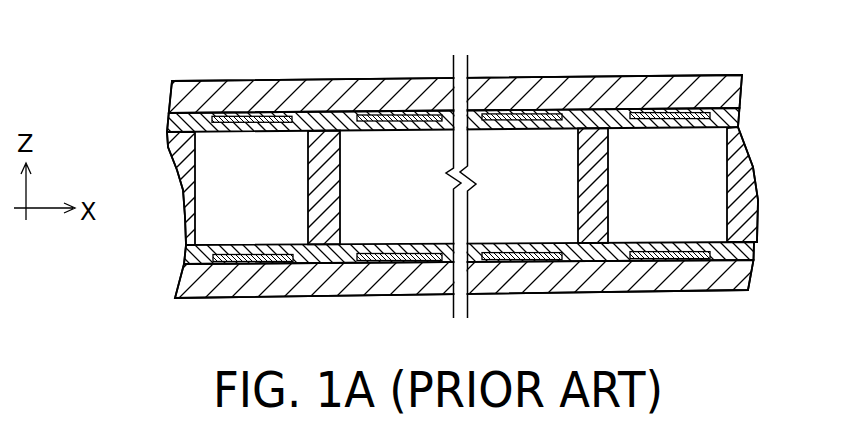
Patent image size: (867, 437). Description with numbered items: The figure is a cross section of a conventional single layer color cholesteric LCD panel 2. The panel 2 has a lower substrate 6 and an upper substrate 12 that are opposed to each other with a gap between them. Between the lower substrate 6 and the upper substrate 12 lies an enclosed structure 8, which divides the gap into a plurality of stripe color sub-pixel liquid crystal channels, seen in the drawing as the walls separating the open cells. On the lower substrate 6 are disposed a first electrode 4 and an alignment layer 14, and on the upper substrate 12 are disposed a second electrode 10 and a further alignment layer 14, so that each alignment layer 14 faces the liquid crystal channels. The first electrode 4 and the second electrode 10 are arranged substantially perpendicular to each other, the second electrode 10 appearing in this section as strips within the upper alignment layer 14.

The single layer color cholesteric LCD panel 2 is at (770, 152).
The first electrode 4 is at (675, 291).
The lower substrate 6 is at (577, 297).
The enclosed structure 8 is at (757, 207).
The second electrode 10 is at (673, 110).
The upper substrate 12 is at (578, 107).
The alignment layer 14 is at (167, 121).